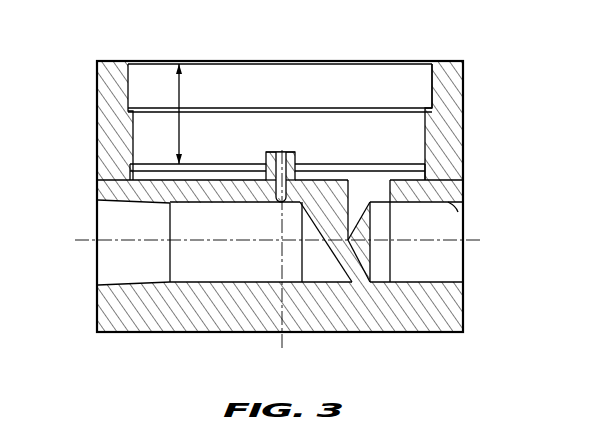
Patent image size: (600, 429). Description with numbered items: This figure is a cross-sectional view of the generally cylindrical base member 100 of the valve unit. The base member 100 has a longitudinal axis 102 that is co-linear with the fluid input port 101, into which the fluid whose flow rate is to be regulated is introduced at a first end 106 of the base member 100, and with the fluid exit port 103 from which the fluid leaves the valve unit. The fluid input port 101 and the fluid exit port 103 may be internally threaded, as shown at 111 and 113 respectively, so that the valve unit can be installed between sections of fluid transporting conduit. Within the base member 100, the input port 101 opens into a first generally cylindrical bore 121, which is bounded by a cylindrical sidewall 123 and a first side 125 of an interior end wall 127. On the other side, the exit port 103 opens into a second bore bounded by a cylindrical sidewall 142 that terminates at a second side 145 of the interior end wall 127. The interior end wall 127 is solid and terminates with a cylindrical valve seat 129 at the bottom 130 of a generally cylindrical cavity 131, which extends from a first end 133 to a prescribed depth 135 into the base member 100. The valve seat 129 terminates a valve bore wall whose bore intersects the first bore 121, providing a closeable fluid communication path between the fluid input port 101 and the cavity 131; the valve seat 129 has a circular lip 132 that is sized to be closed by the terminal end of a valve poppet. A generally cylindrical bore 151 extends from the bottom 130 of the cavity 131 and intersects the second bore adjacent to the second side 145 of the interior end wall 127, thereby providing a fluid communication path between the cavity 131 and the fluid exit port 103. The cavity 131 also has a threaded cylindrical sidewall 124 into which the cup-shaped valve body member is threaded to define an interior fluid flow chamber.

The base member 100 is at (463, 110).
The fluid input port 101 is at (100, 270).
The longitudinal axis 102 is at (480, 239).
The fluid exit port 103 is at (463, 267).
The first end 106 is at (98, 256).
The internal threading of input port 111 is at (100, 202).
The internal threading of exit port 113 is at (452, 209).
The first generally cylindrical bore 121 is at (217, 231).
The cylindrical sidewall 123 is at (178, 283).
The threaded cylindrical sidewall 124 is at (140, 125).
The first side of interior end wall 125 is at (310, 218).
The interior end wall 127 is at (300, 258).
The cylindrical valve seat 129 is at (300, 158).
The bottom of cavity 130 is at (235, 172).
The generally cylindrical cavity 131 is at (390, 70).
The circular lip 132 is at (300, 152).
The first end of cavity 133 is at (440, 61).
The prescribed depth 135 is at (181, 86).
The cylindrical sidewall 142 is at (382, 200).
The second side of interior end wall 145 is at (362, 262).
The generally cylindrical bore 151 is at (380, 190).